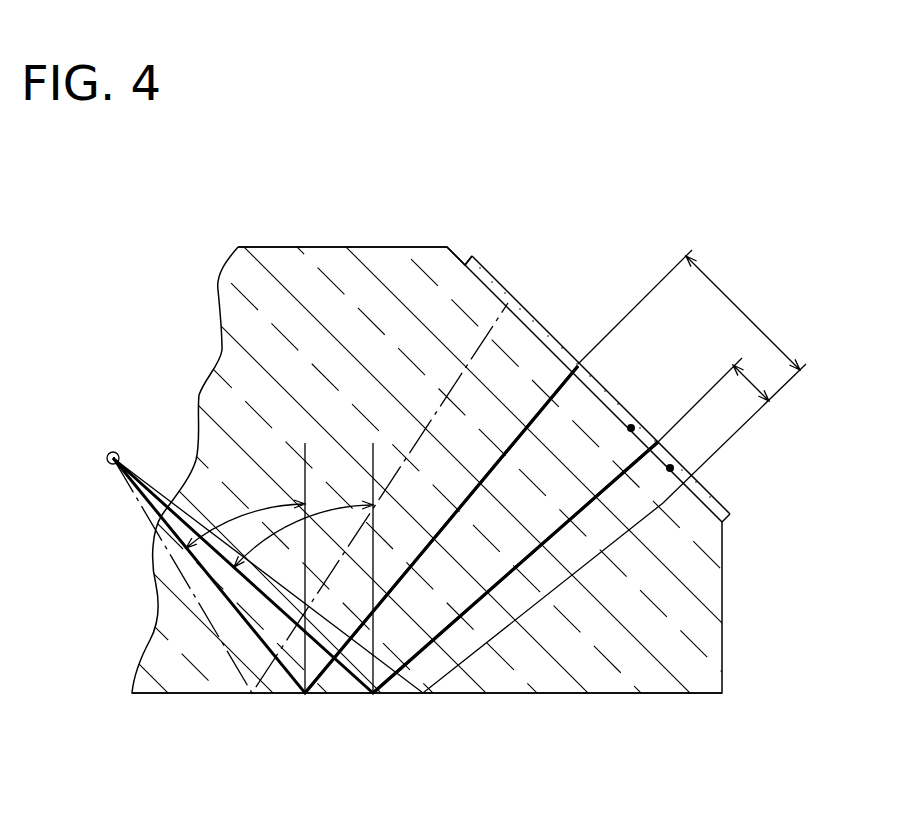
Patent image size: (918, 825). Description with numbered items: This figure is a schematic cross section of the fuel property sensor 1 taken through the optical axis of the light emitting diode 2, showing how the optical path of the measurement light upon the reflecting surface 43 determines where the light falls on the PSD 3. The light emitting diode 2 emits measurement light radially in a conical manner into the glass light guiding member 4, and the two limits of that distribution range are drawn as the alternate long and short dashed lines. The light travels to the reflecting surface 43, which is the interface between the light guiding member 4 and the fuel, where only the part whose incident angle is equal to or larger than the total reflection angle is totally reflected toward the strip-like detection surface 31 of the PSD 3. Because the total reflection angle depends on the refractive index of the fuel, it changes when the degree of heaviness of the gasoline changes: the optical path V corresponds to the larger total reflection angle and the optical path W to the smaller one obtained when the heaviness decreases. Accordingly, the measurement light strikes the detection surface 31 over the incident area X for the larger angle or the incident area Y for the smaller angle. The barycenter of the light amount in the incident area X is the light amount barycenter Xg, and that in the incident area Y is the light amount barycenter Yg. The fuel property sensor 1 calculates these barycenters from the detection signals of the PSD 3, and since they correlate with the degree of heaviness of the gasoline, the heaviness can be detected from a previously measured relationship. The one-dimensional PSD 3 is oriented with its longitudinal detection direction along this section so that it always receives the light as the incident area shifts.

The fuel property sensor 1 is at (168, 196).
The light emitting diode 2 is at (113, 451).
The position sensitive detector (PSD) 3 is at (496, 258).
The detection surface 31 is at (489, 280).
The light guiding member 4 is at (322, 236).
The reflecting surface 43 is at (663, 695).
The optical path W is at (472, 487).
The optical path V is at (548, 540).
The incident area Y is at (689, 310).
The incident area X is at (713, 400).
The light amount barycenter Yg is at (631, 428).
The light amount barycenter Xg is at (670, 468).